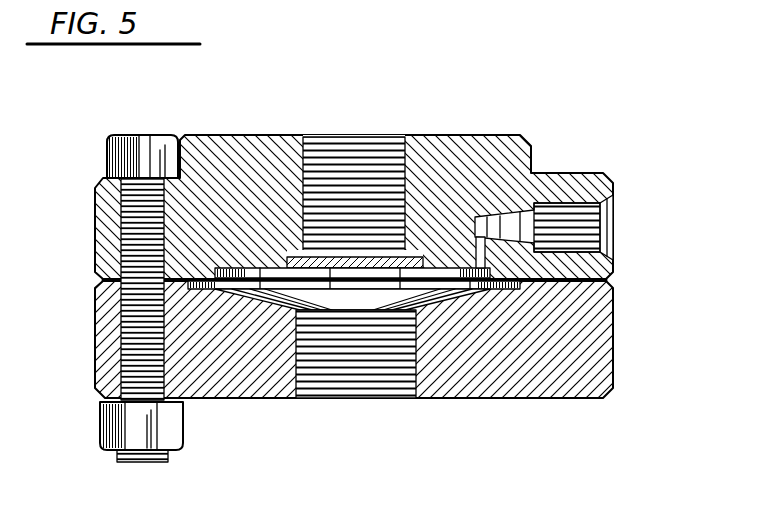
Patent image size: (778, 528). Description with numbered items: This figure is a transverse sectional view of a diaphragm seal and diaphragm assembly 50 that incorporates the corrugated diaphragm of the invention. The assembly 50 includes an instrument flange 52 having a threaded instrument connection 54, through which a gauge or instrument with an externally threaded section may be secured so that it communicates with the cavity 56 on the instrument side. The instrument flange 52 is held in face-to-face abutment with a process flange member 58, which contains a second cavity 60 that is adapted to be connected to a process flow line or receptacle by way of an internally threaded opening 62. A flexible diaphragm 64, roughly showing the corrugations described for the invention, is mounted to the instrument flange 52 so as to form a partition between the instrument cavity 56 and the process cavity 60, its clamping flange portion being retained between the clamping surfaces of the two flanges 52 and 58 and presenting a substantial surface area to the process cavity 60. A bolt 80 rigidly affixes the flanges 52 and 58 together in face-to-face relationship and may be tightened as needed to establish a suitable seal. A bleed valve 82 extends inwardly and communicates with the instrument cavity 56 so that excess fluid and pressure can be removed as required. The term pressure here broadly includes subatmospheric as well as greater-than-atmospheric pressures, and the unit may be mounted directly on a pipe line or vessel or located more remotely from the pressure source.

The assembly 50 is at (598, 145).
The instrument flange 52 is at (460, 152).
The threaded instrument connection 54 is at (355, 150).
The cavity 56 is at (257, 266).
The process flange member 58 is at (512, 367).
The cavity 60 is at (333, 300).
The internally threaded opening 62 is at (360, 365).
The flexible diaphragm 64 is at (380, 300).
The bolt 80 is at (108, 310).
The bleed valve 82 is at (612, 222).